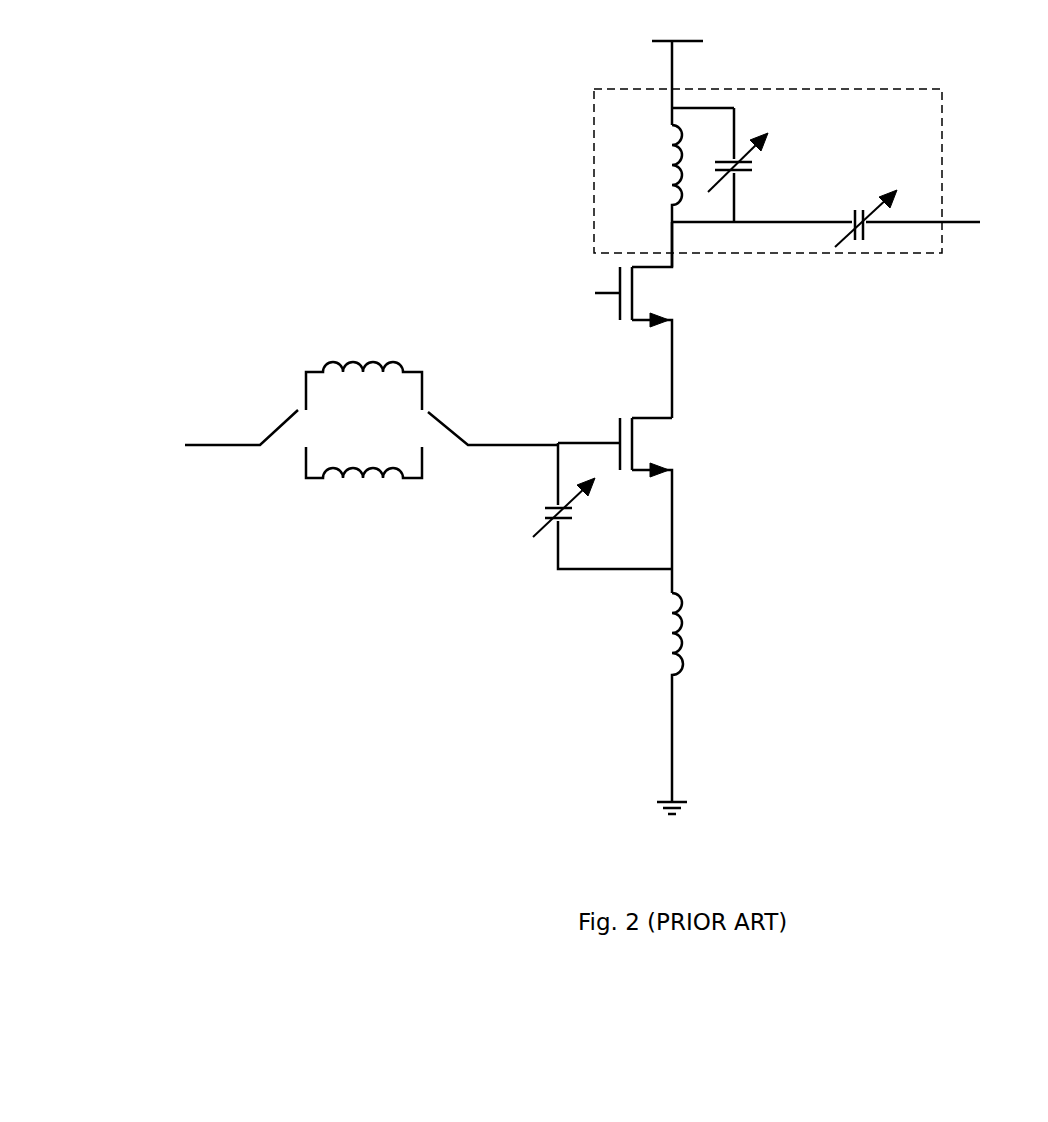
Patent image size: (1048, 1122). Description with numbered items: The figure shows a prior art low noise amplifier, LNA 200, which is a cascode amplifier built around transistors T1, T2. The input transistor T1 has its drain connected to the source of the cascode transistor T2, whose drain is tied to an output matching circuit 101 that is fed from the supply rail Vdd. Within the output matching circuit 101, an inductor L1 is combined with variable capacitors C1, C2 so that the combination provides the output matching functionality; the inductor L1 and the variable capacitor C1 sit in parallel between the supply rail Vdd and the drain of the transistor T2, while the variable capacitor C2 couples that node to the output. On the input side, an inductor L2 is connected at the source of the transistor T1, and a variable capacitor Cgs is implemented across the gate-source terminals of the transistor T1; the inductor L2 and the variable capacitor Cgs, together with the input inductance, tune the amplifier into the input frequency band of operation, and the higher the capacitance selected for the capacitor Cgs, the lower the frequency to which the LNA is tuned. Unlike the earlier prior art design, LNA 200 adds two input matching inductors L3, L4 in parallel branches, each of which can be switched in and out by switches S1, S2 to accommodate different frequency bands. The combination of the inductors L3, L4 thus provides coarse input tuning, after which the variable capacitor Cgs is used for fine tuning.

The supply voltage Vdd is at (692, 69).
The output matching circuit 101 is at (887, 89).
The inductor L1 is at (745, 187).
The variable capacitor C1 is at (750, 165).
The variable capacitor C2 is at (907, 211).
The transistor T2 is at (652, 320).
The transistor T1 is at (635, 505).
The variable capacitor Cgs is at (581, 506).
The inductor L2 is at (692, 703).
The switch S1 is at (241, 427).
The switch S2 is at (493, 425).
The input matching inductor L3 is at (364, 370).
The input matching inductor L4 is at (364, 490).
The prior art LNA 200 is at (999, 773).